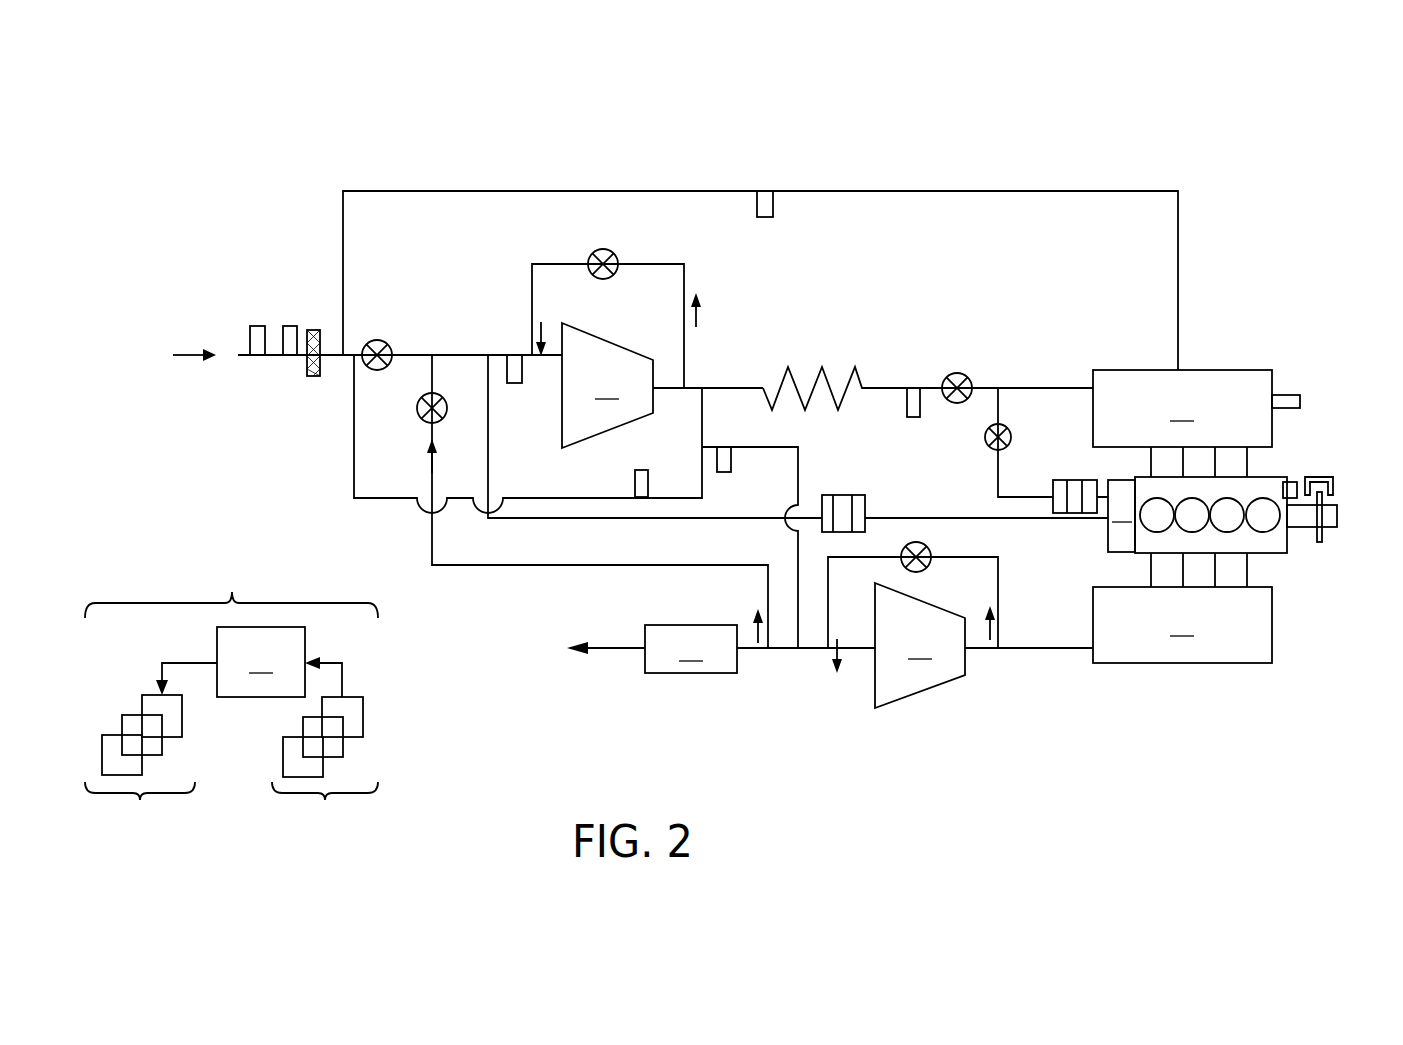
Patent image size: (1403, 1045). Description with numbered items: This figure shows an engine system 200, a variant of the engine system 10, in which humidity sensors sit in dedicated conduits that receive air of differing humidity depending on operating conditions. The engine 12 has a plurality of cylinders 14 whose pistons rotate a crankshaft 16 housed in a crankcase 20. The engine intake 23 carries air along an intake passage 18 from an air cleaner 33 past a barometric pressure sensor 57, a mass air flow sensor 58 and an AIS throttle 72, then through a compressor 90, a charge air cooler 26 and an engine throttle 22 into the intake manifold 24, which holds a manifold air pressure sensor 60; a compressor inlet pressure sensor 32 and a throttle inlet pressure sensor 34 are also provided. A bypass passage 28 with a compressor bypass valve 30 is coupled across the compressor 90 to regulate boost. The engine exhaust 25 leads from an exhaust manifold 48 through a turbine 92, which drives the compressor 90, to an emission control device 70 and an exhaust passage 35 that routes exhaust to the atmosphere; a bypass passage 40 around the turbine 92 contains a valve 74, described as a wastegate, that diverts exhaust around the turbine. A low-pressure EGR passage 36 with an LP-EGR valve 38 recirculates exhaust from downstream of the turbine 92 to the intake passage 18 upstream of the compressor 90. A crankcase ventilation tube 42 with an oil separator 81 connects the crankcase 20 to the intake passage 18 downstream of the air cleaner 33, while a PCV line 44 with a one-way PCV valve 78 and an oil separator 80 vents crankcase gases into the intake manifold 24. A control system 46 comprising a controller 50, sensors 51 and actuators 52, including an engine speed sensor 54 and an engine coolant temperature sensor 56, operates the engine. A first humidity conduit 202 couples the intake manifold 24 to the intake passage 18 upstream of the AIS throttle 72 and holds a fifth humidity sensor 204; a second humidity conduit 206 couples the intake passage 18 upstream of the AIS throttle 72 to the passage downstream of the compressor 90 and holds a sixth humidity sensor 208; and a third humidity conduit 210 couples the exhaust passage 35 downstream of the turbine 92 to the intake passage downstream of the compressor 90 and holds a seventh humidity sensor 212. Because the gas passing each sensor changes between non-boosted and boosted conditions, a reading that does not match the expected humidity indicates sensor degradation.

The engine system 200 is at (1313, 118).
The engine system 10 is at (313, 236).
The engine 12 is at (1260, 560).
The cylinders 14 is at (1147, 528).
The crankshaft 16 is at (1331, 528).
The intake passage 18 is at (248, 354).
The crankcase 20 is at (1121, 516).
The engine throttle 22 is at (952, 371).
The engine intake 23 is at (948, 308).
The engine intake manifold 24 is at (1182, 423).
The engine exhaust 25 is at (1055, 680).
The charge air cooler 26 is at (845, 373).
The bypass passage 28 is at (532, 262).
The compressor bypass valve 30 is at (595, 250).
The compressor inlet pressure sensor 32 is at (514, 383).
The air cleaner 33 is at (315, 378).
The throttle inlet pressure sensor 34 is at (911, 418).
The exhaust passage 35 is at (617, 650).
The low-pressure EGR passage 36 is at (497, 567).
The LP-EGR valve 38 is at (420, 423).
The bypass passage 40 is at (975, 557).
The crankcase ventilation tube 42 is at (614, 522).
The PCV line 44 is at (995, 478).
The control system 46 is at (231, 575).
The exhaust manifold 48 is at (1182, 608).
The controller 50 is at (249, 662).
The sensors 51 is at (325, 781).
The actuators 52 is at (150, 780).
The engine speed sensor 54 is at (1327, 477).
The engine coolant temperature sensor 56 is at (1291, 481).
The barometric pressure sensor 57 is at (257, 326).
The mass air flow sensor 58 is at (290, 326).
The manifold air pressure sensor 60 is at (1302, 402).
The emission control device 70 is at (691, 649).
The AIS throttle 72 is at (387, 342).
The wastegate 74 is at (922, 543).
The one-way PCV valve 78 is at (988, 430).
The oil separator 80 is at (1093, 480).
The oil separator 81 is at (838, 495).
The compressor 90 is at (662, 385).
The turbine 92 is at (920, 645).
The first humidity conduit 202 is at (955, 193).
The fifth humidity sensor 204 is at (765, 218).
The second humidity conduit 206 is at (353, 455).
The sixth humidity sensor 208 is at (643, 469).
The third humidity conduit 210 is at (772, 447).
The seventh humidity sensor 212 is at (723, 473).